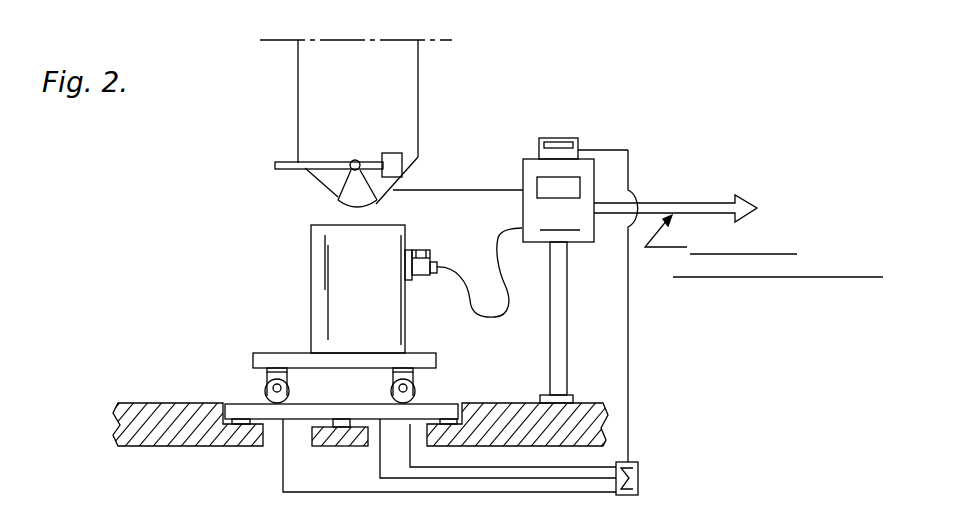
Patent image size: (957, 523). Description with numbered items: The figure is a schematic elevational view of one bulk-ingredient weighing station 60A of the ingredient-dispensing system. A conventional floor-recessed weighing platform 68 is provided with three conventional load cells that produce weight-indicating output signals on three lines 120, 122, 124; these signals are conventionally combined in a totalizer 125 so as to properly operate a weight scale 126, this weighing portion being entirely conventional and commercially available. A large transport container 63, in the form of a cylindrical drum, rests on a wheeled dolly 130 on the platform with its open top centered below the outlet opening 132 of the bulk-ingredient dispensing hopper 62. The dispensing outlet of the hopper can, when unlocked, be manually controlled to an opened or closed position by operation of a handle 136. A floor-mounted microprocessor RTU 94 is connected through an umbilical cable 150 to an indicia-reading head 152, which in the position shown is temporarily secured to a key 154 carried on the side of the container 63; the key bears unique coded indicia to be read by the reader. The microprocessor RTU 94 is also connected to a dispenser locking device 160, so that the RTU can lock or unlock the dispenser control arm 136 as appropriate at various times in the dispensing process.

The bulk-ingredient weighing station 60A is at (473, 114).
The bulk-ingredient dispensing hopper 62 is at (300, 106).
The transport container 63 is at (311, 251).
The weighing platform 68 is at (240, 403).
The microprocessor RTU 94 is at (523, 162).
The line 120 is at (455, 467).
The line 122 is at (380, 467).
The line 124 is at (455, 492).
The totalizer 125 is at (626, 495).
The weight scale 126 is at (567, 138).
The wheeled dolly 130 is at (267, 357).
The outlet opening 132 is at (337, 196).
The handle 136 is at (275, 166).
The umbilical cable 150 is at (497, 318).
The indicia-reading head 152 is at (431, 280).
The key 154 is at (410, 248).
The dispenser locking device 160 is at (399, 153).